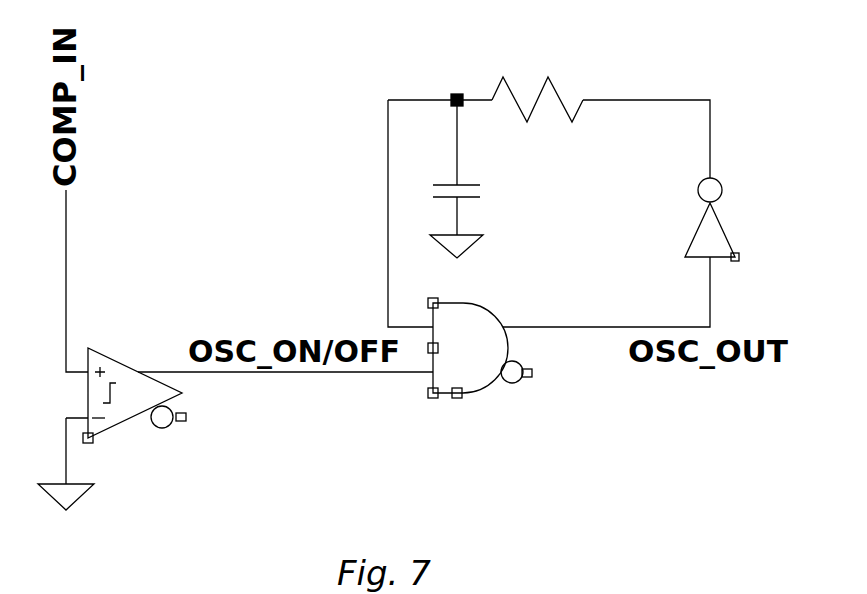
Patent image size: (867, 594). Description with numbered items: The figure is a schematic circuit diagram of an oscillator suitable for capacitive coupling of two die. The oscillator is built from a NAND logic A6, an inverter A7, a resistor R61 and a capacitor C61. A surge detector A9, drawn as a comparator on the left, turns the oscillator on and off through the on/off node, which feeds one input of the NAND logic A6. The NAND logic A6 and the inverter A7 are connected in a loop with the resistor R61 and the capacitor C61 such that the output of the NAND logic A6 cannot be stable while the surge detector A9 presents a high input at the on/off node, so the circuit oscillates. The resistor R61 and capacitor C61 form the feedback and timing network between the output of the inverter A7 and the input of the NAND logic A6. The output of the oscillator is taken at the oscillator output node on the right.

The surge detector A9 is at (134, 377).
The resistor R61 is at (537, 82).
The capacitor C61 is at (478, 182).
The inverter A7 is at (693, 219).
The NAND logic A6 is at (485, 339).